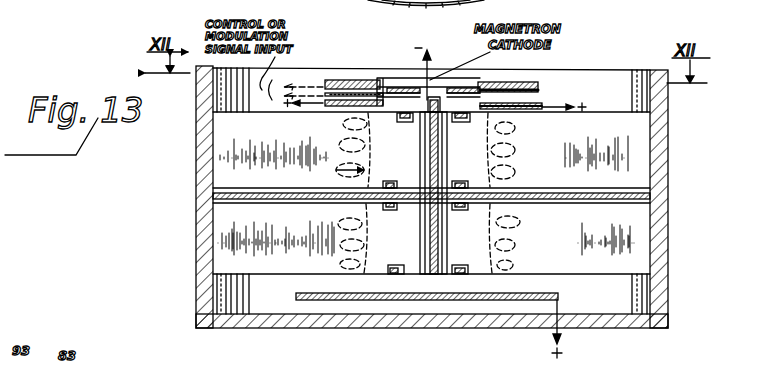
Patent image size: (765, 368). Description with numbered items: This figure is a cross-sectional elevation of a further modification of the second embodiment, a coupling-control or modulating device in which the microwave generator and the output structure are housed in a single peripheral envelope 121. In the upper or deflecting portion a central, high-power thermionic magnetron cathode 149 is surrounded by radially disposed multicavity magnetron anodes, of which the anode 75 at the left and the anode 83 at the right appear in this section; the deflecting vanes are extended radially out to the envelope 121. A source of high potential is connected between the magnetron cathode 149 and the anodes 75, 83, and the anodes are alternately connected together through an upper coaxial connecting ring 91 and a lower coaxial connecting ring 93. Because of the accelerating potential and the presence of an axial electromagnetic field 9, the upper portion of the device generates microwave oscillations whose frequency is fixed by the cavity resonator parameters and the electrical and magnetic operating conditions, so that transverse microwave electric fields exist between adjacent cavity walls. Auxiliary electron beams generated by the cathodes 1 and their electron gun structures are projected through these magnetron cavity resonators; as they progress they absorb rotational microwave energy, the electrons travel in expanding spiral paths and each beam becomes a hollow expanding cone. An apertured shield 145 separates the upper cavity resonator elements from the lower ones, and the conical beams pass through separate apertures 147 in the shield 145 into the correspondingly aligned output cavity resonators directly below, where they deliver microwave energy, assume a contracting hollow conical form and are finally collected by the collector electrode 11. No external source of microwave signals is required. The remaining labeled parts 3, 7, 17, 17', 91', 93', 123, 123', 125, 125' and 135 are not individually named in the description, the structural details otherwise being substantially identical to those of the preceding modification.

The cathode 1 is at (355, 80).
The cathode heater strip 3 is at (540, 94).
The cathode lead 7 is at (535, 109).
The axial electromagnetic field 9 is at (434, 75).
The collector electrode 11 is at (346, 300).
The electron orbit 17 is at (349, 193).
The electron orbit 17' is at (521, 193).
The magnetron anode 75 is at (235, 160).
The magnetron anode 83 is at (637, 160).
The upper coaxial connecting ring 91 is at (446, 124).
The electrode block 91' is at (428, 169).
The lower coaxial connecting ring 93 is at (429, 132).
The electrode insert 93' is at (438, 173).
The peripheral envelope 121 is at (196, 210).
The lower electrode block 123 is at (427, 213).
The lower electrode block 123' is at (430, 262).
The lower electrode insert 125 is at (434, 220).
The lower electrode insert 125' is at (436, 255).
The lower compartment 135 is at (574, 272).
The apertured shield 145 is at (426, 196).
The aperture 147 is at (342, 200).
The central magnetron cathode 149 is at (408, 95).